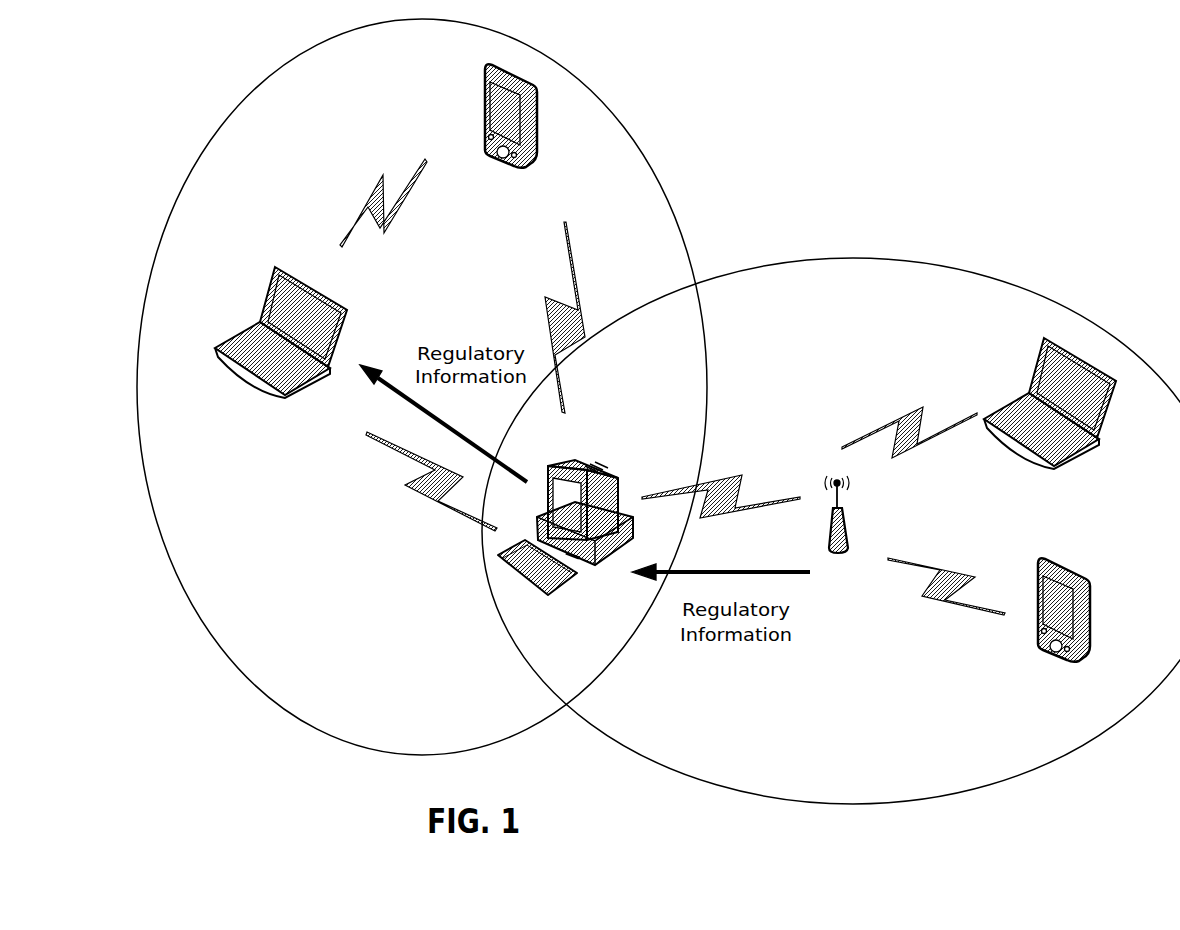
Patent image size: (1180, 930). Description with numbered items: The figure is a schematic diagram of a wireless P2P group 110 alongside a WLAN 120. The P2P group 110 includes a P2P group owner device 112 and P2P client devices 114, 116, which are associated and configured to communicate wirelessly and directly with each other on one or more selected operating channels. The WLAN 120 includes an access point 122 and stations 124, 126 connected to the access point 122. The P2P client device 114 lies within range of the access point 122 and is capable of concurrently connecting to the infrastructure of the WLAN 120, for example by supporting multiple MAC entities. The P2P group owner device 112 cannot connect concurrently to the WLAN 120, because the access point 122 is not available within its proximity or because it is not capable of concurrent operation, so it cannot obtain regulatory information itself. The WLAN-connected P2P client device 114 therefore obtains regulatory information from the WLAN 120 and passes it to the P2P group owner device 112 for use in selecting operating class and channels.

The wireless P2P group 110 is at (248, 100).
The P2P group owner device 112 is at (237, 332).
The P2P client device 114 is at (595, 458).
The P2P client device 116 is at (480, 107).
The WLAN 120 is at (903, 260).
The access point 122 is at (848, 522).
The station 124 is at (1030, 370).
The station 126 is at (1093, 610).